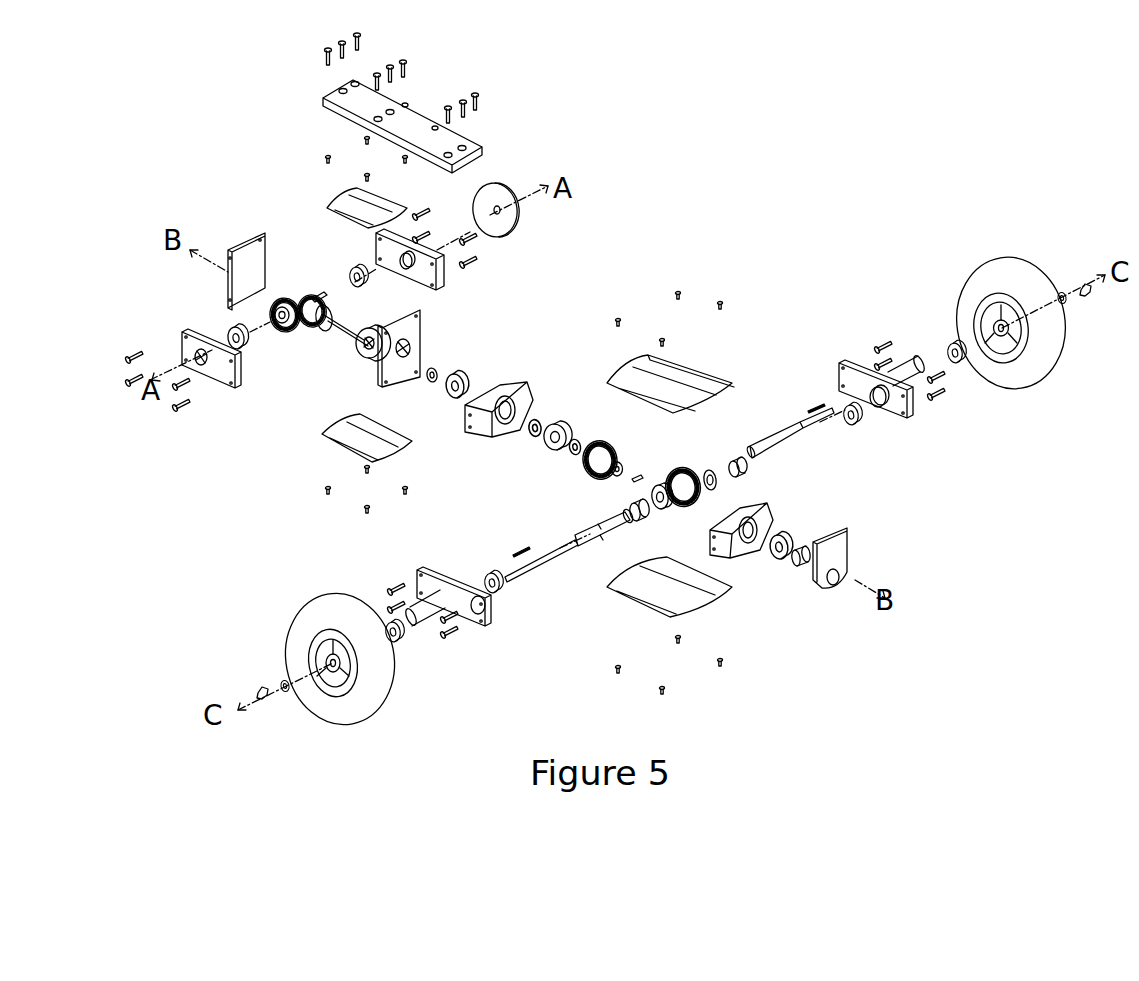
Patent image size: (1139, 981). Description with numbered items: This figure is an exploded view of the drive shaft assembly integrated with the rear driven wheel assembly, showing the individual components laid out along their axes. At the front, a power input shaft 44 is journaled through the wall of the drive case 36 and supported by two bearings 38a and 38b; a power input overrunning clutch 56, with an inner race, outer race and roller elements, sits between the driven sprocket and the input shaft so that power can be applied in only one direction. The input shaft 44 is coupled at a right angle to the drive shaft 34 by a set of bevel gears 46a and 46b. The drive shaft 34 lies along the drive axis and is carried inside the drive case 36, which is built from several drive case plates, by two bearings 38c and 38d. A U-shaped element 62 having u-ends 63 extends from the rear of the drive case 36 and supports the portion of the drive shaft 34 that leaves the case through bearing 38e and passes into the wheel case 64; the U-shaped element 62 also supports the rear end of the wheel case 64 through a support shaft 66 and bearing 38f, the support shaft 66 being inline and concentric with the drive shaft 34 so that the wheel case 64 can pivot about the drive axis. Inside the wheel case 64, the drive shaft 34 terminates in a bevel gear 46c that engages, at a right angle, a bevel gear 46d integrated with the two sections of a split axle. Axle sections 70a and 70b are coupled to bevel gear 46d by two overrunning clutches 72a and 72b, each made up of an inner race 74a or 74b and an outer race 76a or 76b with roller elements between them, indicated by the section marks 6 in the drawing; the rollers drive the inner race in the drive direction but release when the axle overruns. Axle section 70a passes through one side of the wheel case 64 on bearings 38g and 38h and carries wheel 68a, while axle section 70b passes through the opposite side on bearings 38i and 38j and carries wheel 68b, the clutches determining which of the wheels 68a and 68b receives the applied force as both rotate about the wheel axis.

The U-shaped element 62 is at (465, 135).
The drive case 36 is at (345, 203).
The u-ends 63 is at (250, 238).
The bevel gear 46a is at (277, 300).
The bevel gear 46b is at (310, 330).
The power input shaft 44 is at (325, 297).
The drive shaft 34 is at (350, 328).
The bearing 38a is at (353, 272).
The bearing 38b is at (232, 333).
The bearing 38c is at (370, 358).
The bearing 38d is at (460, 385).
The bearing 38e is at (552, 450).
The bearing 38f is at (781, 545).
The bearing 38g is at (497, 592).
The bearing 38h is at (400, 640).
The bearing 38i is at (851, 425).
The bearing 38j is at (957, 362).
The power input overrunning clutch 56 is at (503, 223).
The bevel gear 46c is at (600, 448).
The bevel gear 46d is at (686, 478).
The outer race 76a is at (650, 492).
The outer race 76b is at (712, 468).
The inner race 74a is at (626, 512).
The inner race 74b is at (742, 452).
The overrunning clutch 72a is at (662, 512).
The overrunning clutch 72b is at (742, 470).
The axle section 70a is at (600, 558).
The axle section 70b is at (790, 430).
The wheel case 64 is at (695, 373).
The support shaft 66 is at (800, 565).
The wheel 68a is at (315, 612).
The wheel 68b is at (1002, 282).
The section line 6 is at (707, 458).